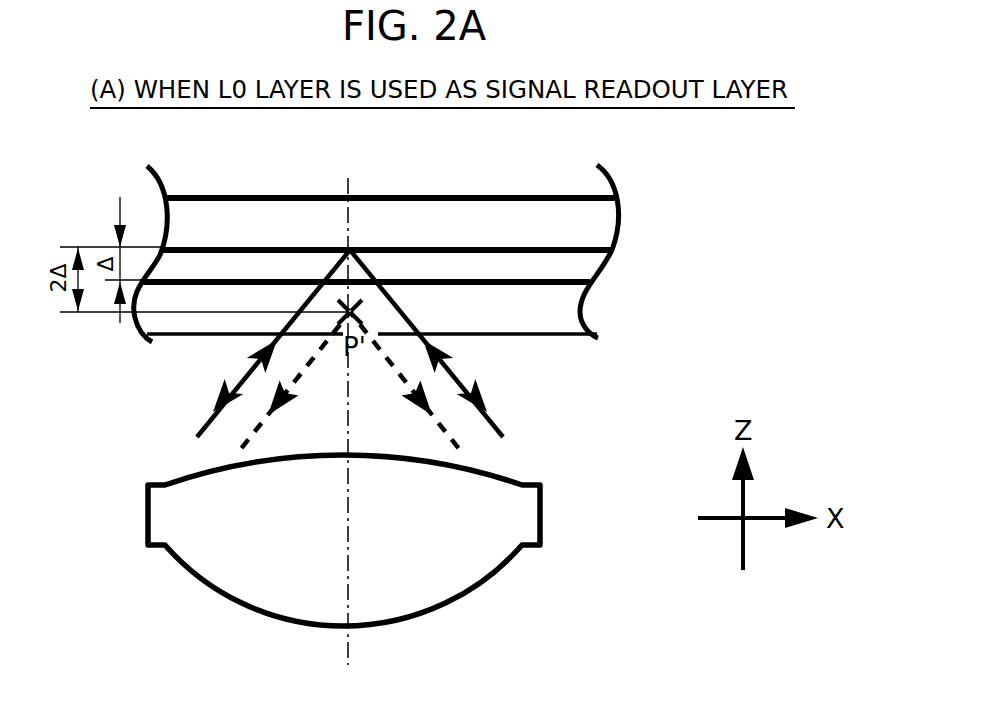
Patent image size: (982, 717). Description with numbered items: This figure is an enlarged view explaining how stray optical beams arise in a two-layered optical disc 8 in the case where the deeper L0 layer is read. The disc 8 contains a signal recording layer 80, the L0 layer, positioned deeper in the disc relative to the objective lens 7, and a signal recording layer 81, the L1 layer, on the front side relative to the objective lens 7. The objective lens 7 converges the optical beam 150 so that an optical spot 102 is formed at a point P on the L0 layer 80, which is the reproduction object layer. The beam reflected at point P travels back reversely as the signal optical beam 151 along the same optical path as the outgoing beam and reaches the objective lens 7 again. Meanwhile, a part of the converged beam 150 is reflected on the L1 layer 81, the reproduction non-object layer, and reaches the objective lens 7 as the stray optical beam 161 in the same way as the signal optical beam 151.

The objective lens 7 is at (480, 523).
The optical disc 8 is at (533, 312).
The signal recording layer (L0 layer) 80 is at (572, 238).
The signal recording layer (L1 layer) 81 is at (583, 273).
The optical spot 102 is at (350, 248).
The optical beam 150 is at (250, 365).
The signal optical beam 151 is at (217, 408).
The stray optical beam 161 is at (440, 430).